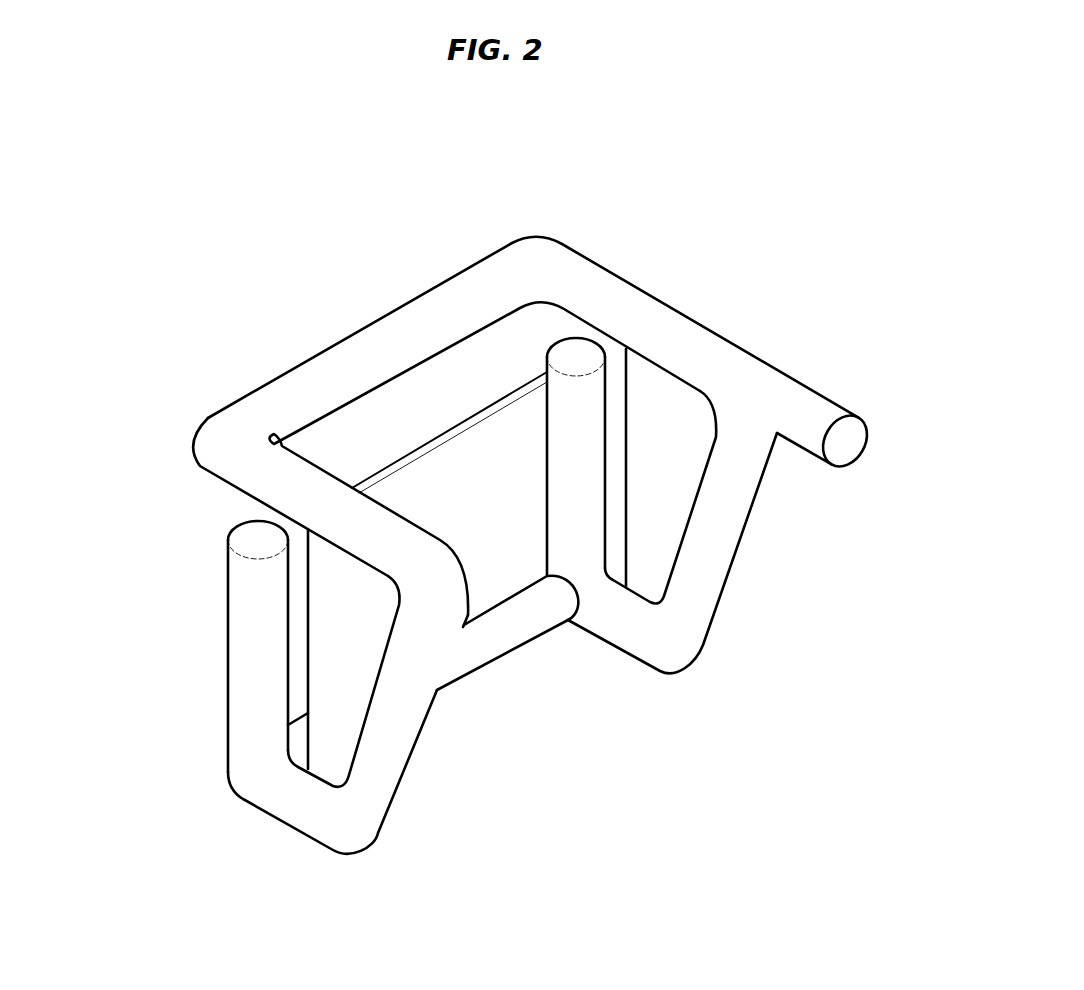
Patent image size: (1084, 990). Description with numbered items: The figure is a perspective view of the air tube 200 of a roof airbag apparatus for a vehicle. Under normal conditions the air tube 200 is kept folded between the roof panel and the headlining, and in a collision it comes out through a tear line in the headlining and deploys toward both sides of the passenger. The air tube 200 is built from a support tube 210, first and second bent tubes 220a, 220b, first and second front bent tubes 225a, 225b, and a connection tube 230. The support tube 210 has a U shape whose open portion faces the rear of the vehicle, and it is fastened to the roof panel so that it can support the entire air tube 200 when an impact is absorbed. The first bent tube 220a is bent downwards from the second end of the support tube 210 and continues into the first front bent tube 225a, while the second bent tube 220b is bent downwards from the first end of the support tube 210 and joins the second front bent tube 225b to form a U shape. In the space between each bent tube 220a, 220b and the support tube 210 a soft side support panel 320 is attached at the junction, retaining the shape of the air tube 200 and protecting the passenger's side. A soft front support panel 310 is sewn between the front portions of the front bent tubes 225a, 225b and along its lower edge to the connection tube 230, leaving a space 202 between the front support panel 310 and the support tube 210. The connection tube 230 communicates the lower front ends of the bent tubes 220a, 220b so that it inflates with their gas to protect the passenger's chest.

The air tube 200 is at (426, 242).
The space 202 is at (493, 366).
The support tube 210 is at (673, 330).
The first bent tube 220a is at (388, 763).
The second bent tube 220b is at (715, 568).
The first front bent tube 225a is at (263, 717).
The second front bent tube 225b is at (577, 507).
The connection tube 230 is at (493, 640).
The front support panel 310 is at (437, 467).
The side support panel 320 is at (680, 433).